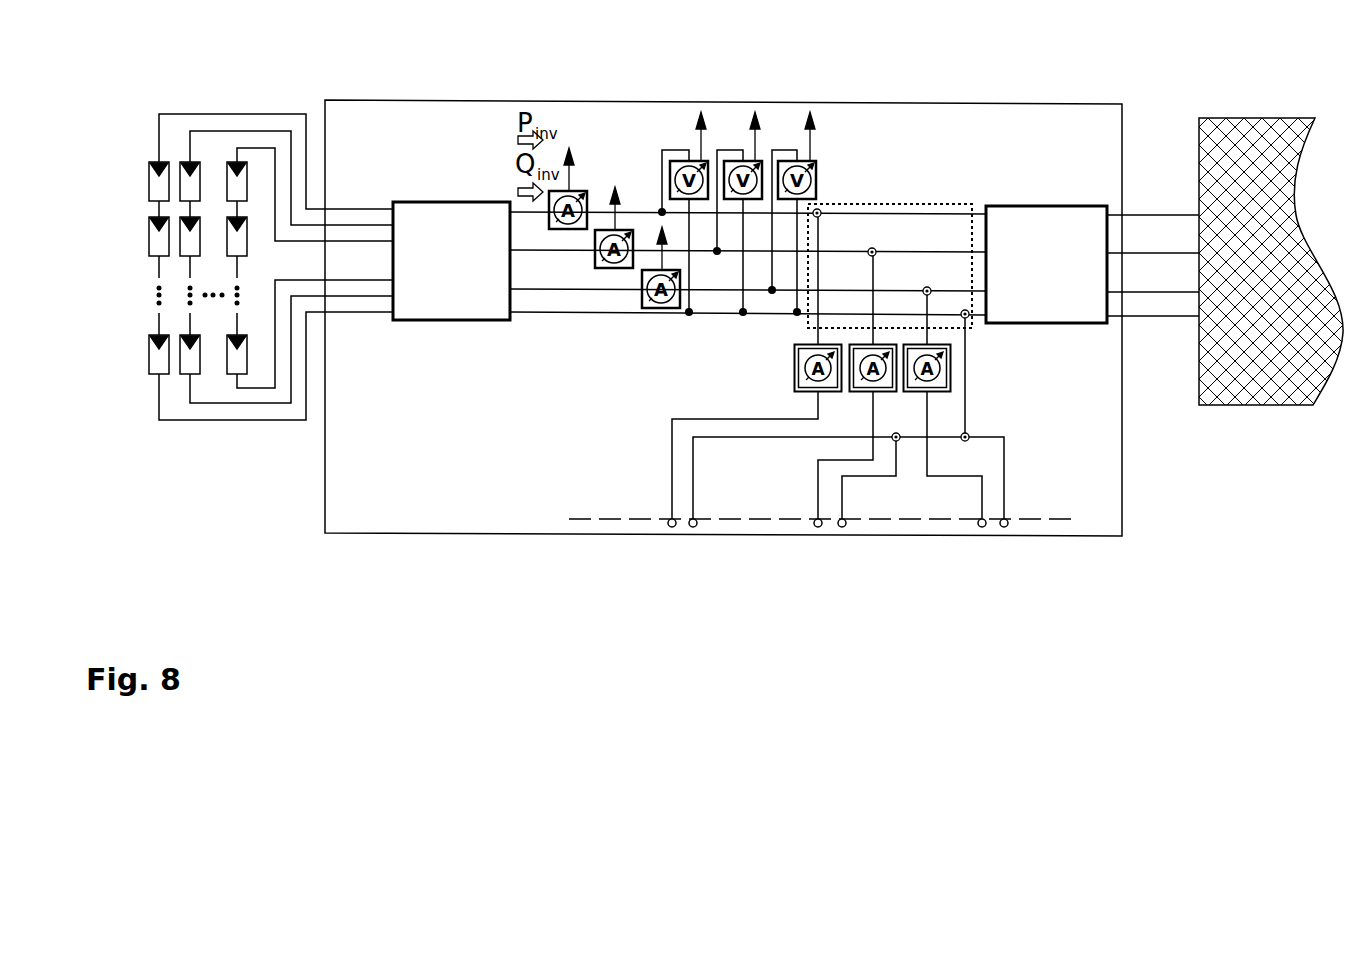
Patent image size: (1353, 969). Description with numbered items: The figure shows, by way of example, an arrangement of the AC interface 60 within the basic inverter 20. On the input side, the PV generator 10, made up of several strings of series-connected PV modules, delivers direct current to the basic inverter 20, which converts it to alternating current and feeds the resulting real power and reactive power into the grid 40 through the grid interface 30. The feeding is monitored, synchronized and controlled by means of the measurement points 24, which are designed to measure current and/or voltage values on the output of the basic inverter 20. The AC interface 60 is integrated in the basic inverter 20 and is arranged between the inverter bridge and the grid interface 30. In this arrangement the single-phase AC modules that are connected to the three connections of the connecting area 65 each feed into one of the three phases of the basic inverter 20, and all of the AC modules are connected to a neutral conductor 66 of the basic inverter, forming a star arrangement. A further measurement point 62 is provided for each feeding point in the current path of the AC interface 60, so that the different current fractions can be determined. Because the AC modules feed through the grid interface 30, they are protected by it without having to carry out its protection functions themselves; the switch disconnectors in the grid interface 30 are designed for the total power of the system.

The PV generator 10 is at (140, 212).
The basic inverter 20 is at (363, 97).
The measurement points 24 is at (657, 178).
The grid interface 30 is at (1030, 200).
The grid 40 is at (1223, 117).
The AC interface 60 is at (891, 203).
The measurement point 62 is at (951, 373).
The connecting area 65 is at (607, 518).
The neutral conductor 66 is at (602, 314).